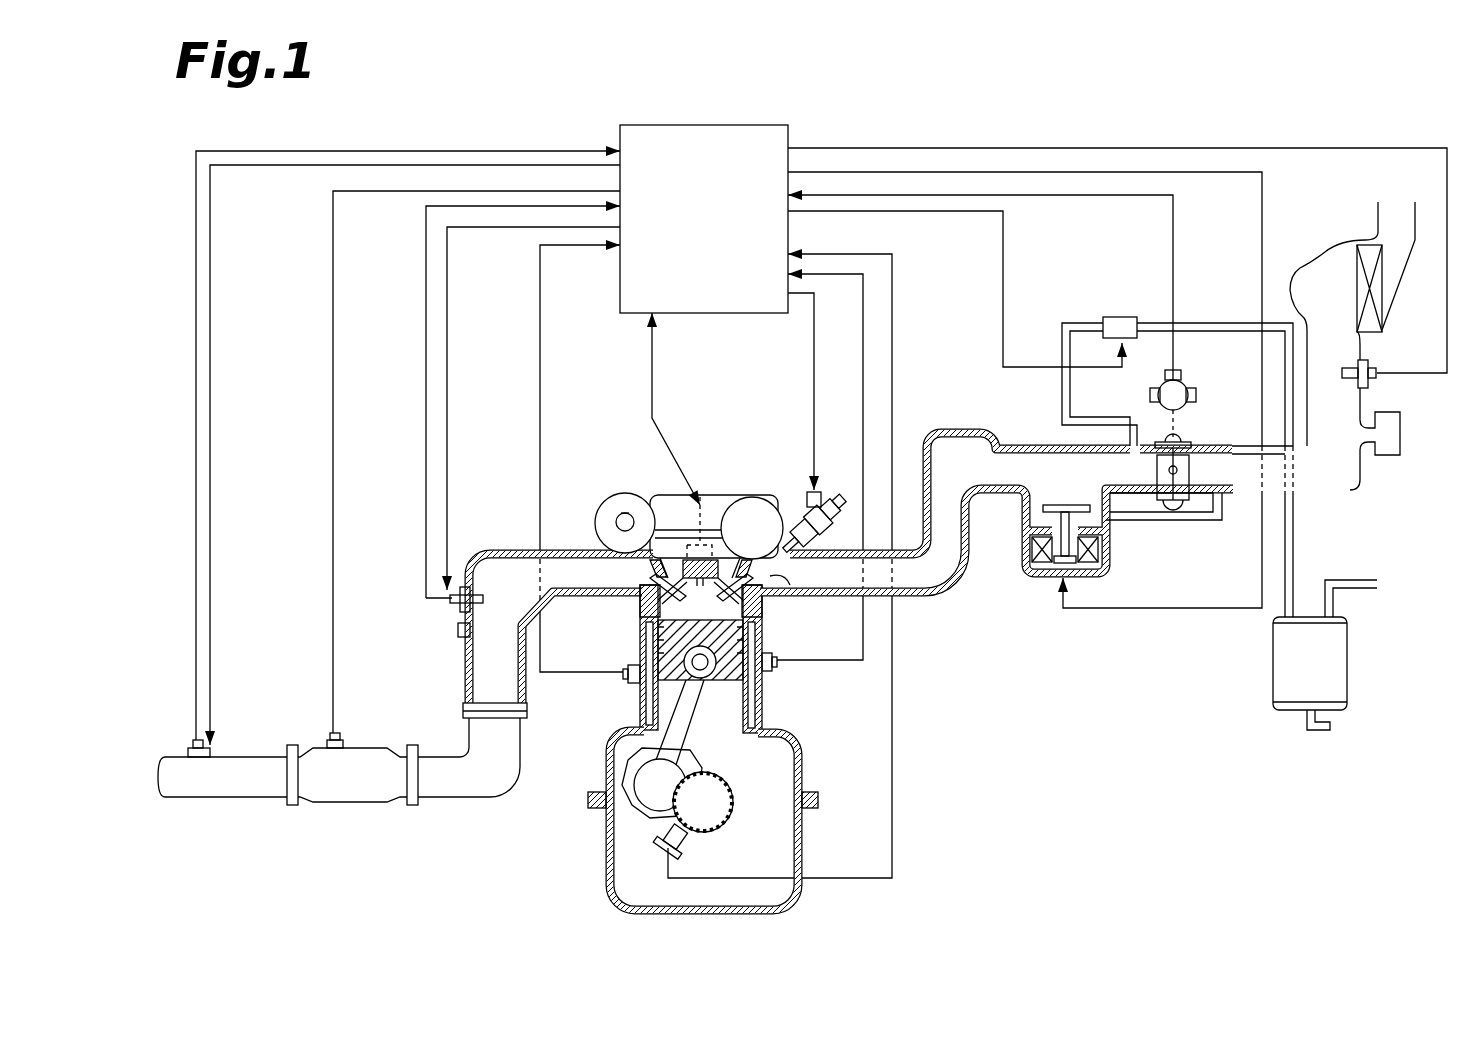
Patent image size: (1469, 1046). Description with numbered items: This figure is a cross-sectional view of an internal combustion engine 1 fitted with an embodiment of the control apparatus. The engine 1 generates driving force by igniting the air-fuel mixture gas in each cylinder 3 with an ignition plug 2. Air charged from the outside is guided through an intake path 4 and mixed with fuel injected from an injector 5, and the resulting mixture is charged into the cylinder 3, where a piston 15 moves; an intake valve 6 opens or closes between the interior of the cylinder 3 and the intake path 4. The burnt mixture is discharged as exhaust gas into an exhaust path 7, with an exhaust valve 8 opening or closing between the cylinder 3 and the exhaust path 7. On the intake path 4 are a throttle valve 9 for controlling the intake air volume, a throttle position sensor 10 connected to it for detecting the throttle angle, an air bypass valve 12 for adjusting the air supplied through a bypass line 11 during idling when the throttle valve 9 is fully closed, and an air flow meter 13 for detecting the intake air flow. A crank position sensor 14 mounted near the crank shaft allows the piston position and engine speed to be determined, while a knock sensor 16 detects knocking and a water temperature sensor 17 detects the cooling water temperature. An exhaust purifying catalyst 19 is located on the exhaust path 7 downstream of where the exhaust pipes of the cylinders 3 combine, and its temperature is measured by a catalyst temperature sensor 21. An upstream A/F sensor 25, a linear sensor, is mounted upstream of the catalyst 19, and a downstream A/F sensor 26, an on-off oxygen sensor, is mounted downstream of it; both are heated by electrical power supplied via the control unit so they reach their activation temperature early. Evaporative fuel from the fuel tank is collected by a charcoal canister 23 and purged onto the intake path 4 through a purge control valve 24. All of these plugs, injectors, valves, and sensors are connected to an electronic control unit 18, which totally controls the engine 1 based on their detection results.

The engine 1 is at (948, 742).
The ignition plug 2 is at (700, 520).
The cylinder 3 is at (660, 614).
The intake path 4 is at (935, 583).
The injector 5 is at (798, 530).
The intake valve 6 is at (770, 578).
The exhaust path 7 is at (478, 680).
The exhaust valve 8 is at (660, 585).
The throttle valve 9 is at (1188, 490).
The throttle position sensor 10 is at (1182, 393).
The bypass line 11 is at (1145, 515).
The air bypass valve 12 is at (1040, 578).
The air flow meter 13 is at (1371, 380).
The crank position sensor 14 is at (665, 838).
The piston 15 is at (642, 715).
The knock sensor 16 is at (628, 683).
The water temperature sensor 17 is at (778, 668).
The electronic control unit 18 is at (697, 128).
The exhaust purifying catalyst 19 is at (362, 800).
The catalyst temperature sensor 21 is at (328, 740).
The charcoal canister 23 is at (1340, 667).
The purge control valve 24 is at (1120, 317).
The upstream A/F sensor 25 is at (455, 607).
The downstream A/F sensor 26 is at (190, 752).